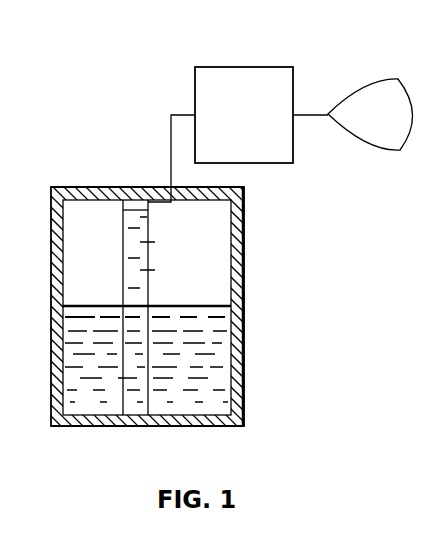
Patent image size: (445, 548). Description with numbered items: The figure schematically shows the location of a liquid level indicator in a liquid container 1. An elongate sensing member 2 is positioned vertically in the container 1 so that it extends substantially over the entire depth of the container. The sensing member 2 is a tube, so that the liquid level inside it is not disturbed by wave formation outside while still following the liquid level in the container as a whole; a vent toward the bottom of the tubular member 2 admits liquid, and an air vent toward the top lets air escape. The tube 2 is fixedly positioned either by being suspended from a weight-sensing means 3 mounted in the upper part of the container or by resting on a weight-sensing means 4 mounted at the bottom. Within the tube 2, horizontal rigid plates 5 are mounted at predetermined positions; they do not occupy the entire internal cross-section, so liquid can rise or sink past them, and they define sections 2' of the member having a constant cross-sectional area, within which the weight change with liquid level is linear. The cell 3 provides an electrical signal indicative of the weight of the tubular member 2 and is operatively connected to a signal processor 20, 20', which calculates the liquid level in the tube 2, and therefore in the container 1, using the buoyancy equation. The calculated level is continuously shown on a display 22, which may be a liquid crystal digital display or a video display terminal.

The liquid container 1 is at (245, 373).
The sensing member 2 is at (158, 307).
The sections of the member 2' is at (172, 243).
The weight-sensing means 3 is at (135, 187).
The weight-sensing means 4 is at (137, 427).
The plates 5 is at (123, 288).
The signal processor 20 is at (211, 124).
The signal processor 20' is at (211, 124).
The display 22 is at (388, 79).